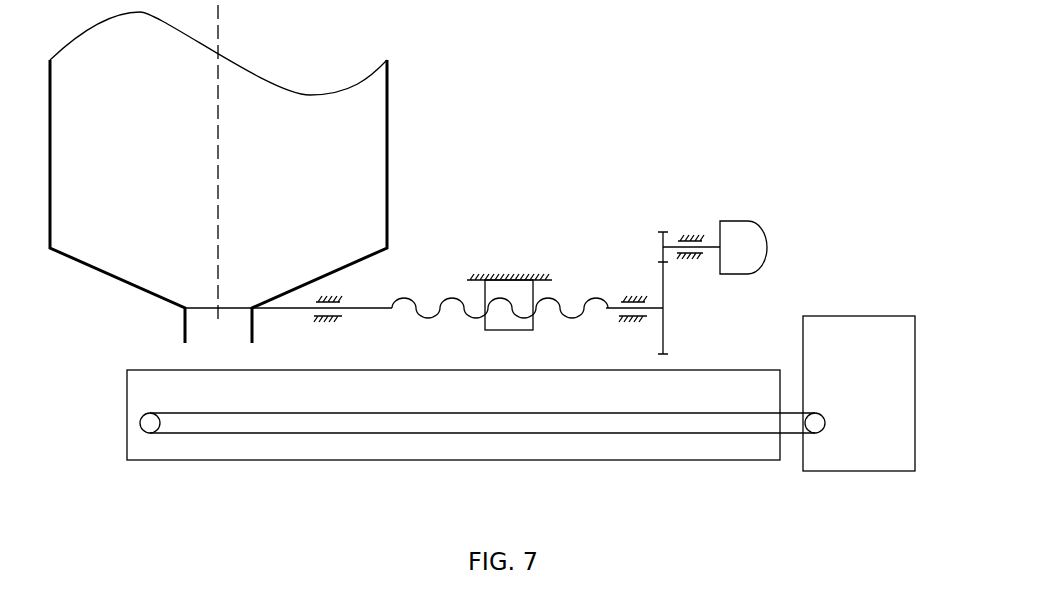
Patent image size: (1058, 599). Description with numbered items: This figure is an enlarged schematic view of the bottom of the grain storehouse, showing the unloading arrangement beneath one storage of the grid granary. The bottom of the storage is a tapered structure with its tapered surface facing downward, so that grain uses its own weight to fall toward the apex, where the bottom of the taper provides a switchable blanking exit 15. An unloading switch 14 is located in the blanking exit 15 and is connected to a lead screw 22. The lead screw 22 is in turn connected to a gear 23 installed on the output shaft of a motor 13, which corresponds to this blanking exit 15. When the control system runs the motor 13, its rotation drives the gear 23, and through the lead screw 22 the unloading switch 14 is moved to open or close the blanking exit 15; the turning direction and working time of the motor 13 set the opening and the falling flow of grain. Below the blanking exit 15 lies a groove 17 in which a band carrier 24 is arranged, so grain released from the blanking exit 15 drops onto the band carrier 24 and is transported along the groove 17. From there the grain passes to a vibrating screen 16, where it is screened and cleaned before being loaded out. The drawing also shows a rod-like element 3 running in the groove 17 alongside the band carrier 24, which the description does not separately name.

The blanking exit 15 is at (235, 295).
The unloading switch 14 is at (347, 310).
The band carrier 24 is at (417, 305).
The lead screw 22 is at (508, 298).
The gear 23 is at (667, 288).
The motor 13 is at (742, 228).
The vibrating screen 16 is at (857, 375).
The groove 17 is at (208, 446).
The roller rod 3 is at (357, 423).